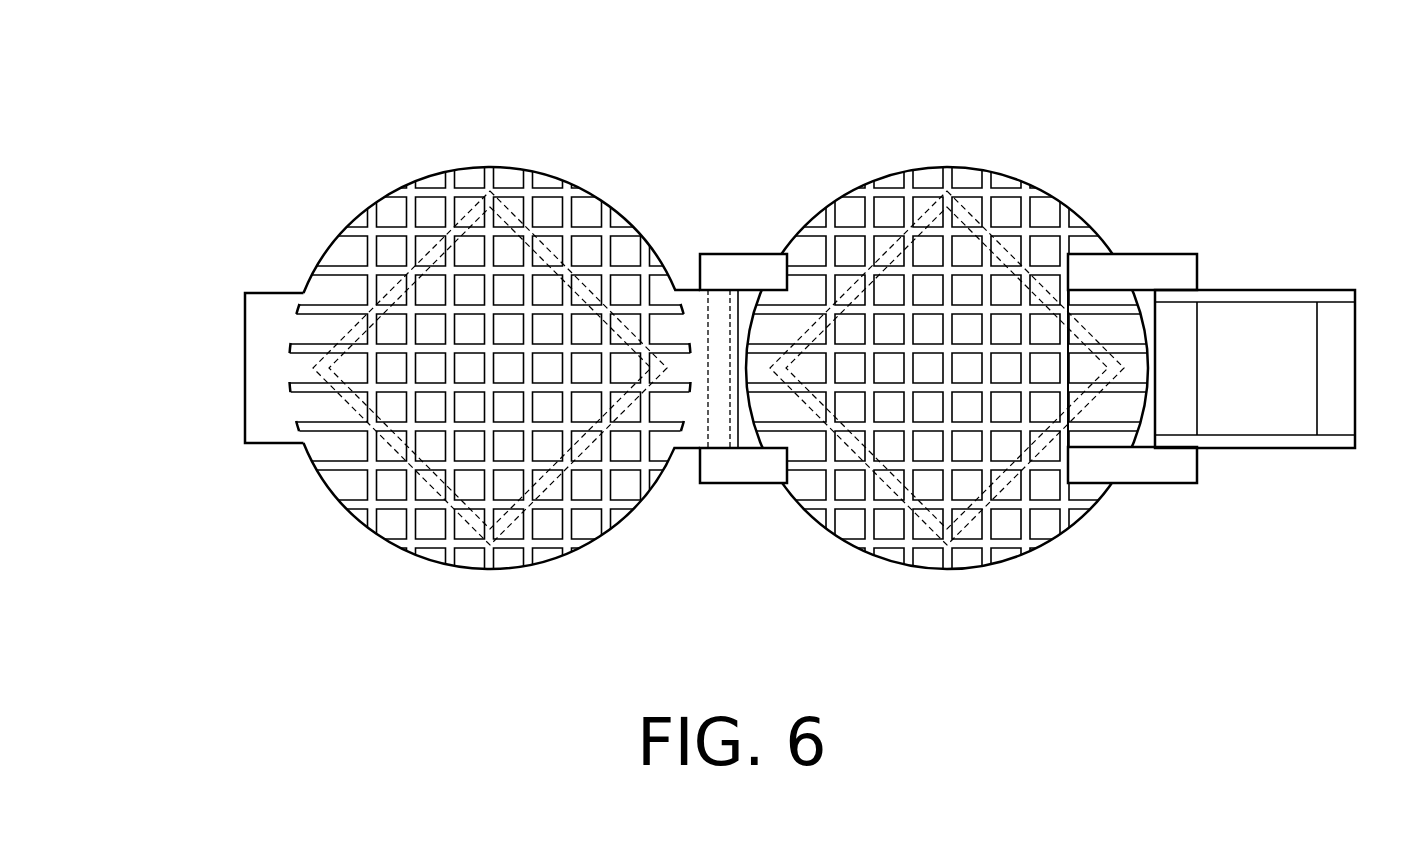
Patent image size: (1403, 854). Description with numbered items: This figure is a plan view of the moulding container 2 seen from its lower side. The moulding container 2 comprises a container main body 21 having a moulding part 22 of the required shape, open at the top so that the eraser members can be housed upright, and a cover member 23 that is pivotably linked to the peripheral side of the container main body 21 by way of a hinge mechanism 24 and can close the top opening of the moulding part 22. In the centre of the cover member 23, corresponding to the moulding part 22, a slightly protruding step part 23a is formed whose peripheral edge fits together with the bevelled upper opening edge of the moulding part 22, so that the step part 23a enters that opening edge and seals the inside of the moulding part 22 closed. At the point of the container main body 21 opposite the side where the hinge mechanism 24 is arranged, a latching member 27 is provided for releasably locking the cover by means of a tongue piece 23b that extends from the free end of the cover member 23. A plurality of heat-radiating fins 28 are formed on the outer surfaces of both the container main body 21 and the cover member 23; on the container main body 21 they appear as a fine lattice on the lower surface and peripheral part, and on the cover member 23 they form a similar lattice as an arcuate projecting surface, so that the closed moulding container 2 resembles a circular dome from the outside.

The moulding container 2 is at (754, 355).
The container main body 21 is at (928, 571).
The moulding part 22 is at (1035, 514).
The cover member 23 is at (467, 571).
The step part 23a is at (383, 436).
The tongue piece 23b is at (247, 368).
The hinge mechanism 24 is at (728, 253).
The latching member 27 is at (1312, 284).
The heat-radiating fins 28 is at (540, 182).